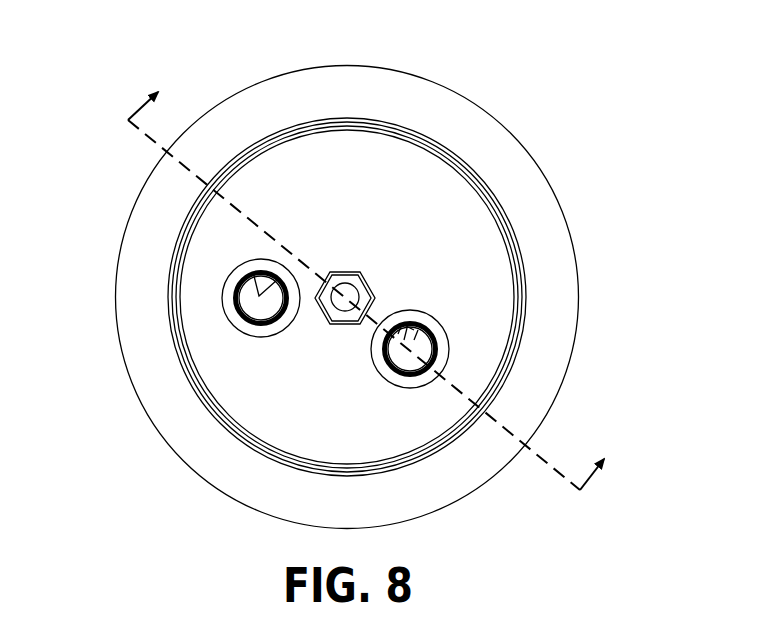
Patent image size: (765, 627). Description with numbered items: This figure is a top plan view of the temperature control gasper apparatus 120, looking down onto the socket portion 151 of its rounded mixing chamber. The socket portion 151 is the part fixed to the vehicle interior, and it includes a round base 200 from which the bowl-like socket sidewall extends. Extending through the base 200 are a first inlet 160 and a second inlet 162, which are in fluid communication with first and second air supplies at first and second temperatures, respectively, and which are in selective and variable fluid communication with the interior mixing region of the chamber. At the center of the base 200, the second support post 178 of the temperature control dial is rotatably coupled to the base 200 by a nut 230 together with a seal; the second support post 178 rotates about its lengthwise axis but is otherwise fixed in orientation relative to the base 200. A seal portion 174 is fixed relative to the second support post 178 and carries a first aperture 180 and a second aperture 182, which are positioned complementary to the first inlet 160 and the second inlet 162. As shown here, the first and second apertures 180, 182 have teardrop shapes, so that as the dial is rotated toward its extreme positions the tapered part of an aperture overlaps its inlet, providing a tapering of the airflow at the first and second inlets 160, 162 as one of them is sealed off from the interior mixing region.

The gasper apparatus 120 is at (220, 76).
The socket portion 151 is at (472, 118).
The round base 200 is at (365, 176).
The first inlet 160 is at (271, 330).
The first aperture 180 is at (256, 268).
The seal portion 174 is at (276, 312).
The nut 230 is at (364, 271).
The second support post 178 is at (346, 288).
The second inlet 162 is at (434, 352).
The second aperture 182 is at (420, 324).